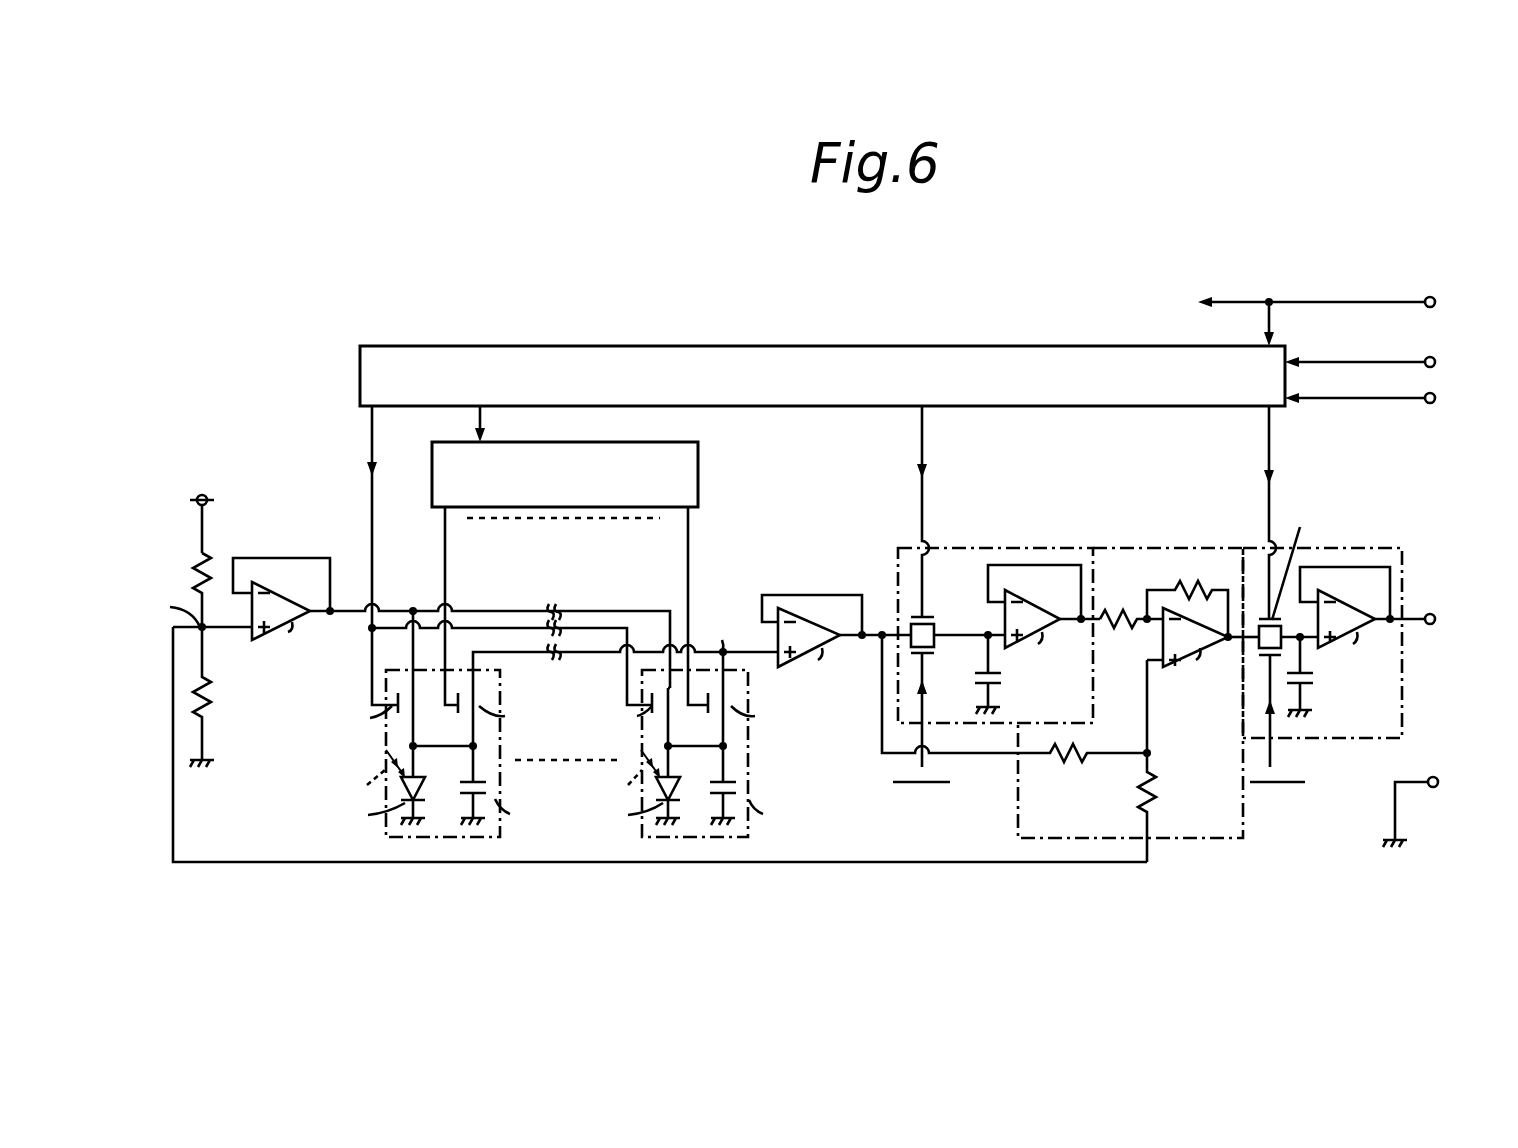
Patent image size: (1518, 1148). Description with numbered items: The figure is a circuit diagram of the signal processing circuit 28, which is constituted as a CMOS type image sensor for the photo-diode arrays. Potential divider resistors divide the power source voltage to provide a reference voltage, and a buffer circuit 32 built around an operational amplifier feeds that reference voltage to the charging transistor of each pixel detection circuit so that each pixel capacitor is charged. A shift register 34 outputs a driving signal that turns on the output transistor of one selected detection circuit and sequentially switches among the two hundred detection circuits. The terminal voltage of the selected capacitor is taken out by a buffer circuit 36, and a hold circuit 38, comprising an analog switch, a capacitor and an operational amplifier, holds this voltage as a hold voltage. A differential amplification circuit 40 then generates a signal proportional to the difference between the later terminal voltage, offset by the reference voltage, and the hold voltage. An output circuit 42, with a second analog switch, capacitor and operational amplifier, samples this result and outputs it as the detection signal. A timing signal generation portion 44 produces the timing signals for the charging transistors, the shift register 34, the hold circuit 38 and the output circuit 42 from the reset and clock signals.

The signal processing circuit 28 is at (735, 310).
The buffer circuit 32 is at (279, 652).
The shift register 34 is at (698, 470).
The buffer circuit 36 is at (801, 590).
The hold circuit 38 is at (1021, 547).
The differential amplification circuit 40 is at (1163, 547).
The output circuit 42 is at (1376, 547).
The timing signal generation portion 44 is at (1117, 346).